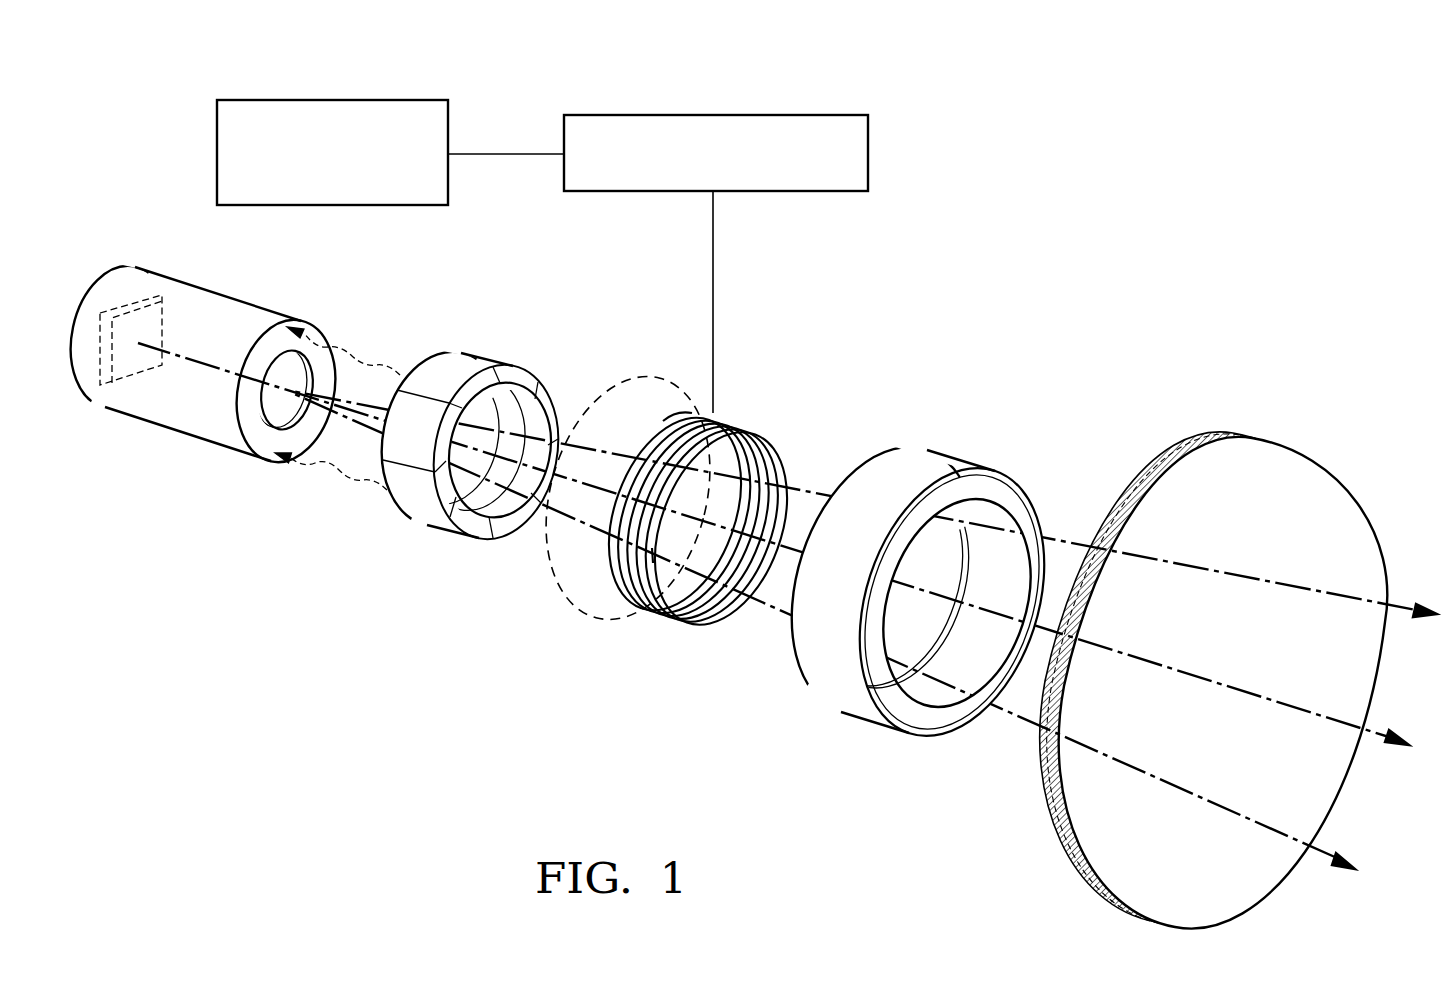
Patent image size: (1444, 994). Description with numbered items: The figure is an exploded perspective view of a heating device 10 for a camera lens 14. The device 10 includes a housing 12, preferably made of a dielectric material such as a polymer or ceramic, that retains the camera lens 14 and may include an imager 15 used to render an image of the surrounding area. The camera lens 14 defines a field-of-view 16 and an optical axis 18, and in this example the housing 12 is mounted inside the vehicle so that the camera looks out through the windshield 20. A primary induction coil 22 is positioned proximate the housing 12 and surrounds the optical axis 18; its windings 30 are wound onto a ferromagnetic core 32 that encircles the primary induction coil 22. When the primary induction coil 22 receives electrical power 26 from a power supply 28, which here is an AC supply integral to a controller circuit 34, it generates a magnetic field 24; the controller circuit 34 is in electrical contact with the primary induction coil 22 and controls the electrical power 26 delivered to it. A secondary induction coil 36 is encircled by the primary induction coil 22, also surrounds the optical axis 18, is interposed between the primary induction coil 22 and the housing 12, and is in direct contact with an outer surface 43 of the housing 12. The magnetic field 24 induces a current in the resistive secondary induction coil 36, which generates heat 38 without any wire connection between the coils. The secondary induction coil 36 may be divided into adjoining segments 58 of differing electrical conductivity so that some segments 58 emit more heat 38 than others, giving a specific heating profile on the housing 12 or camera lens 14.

The heating device 10 is at (887, 74).
The housing 12 is at (132, 392).
The camera lens 14 is at (280, 373).
The imager 15 is at (140, 313).
The field-of-view 16 is at (1311, 586).
The optical axis 18 is at (1343, 727).
The windshield 20 is at (1299, 485).
The primary induction coil 22 is at (660, 617).
The magnetic field 24 is at (553, 585).
The electrical power 26 is at (713, 302).
The power supply 28 is at (255, 100).
The windings 30 is at (513, 367).
The ferromagnetic core 32 is at (853, 700).
The controller circuit 34 is at (618, 115).
The secondary induction coil 36 is at (423, 507).
The heat 38 is at (328, 473).
The outer surface 43 is at (200, 432).
The segments 58 is at (445, 377).